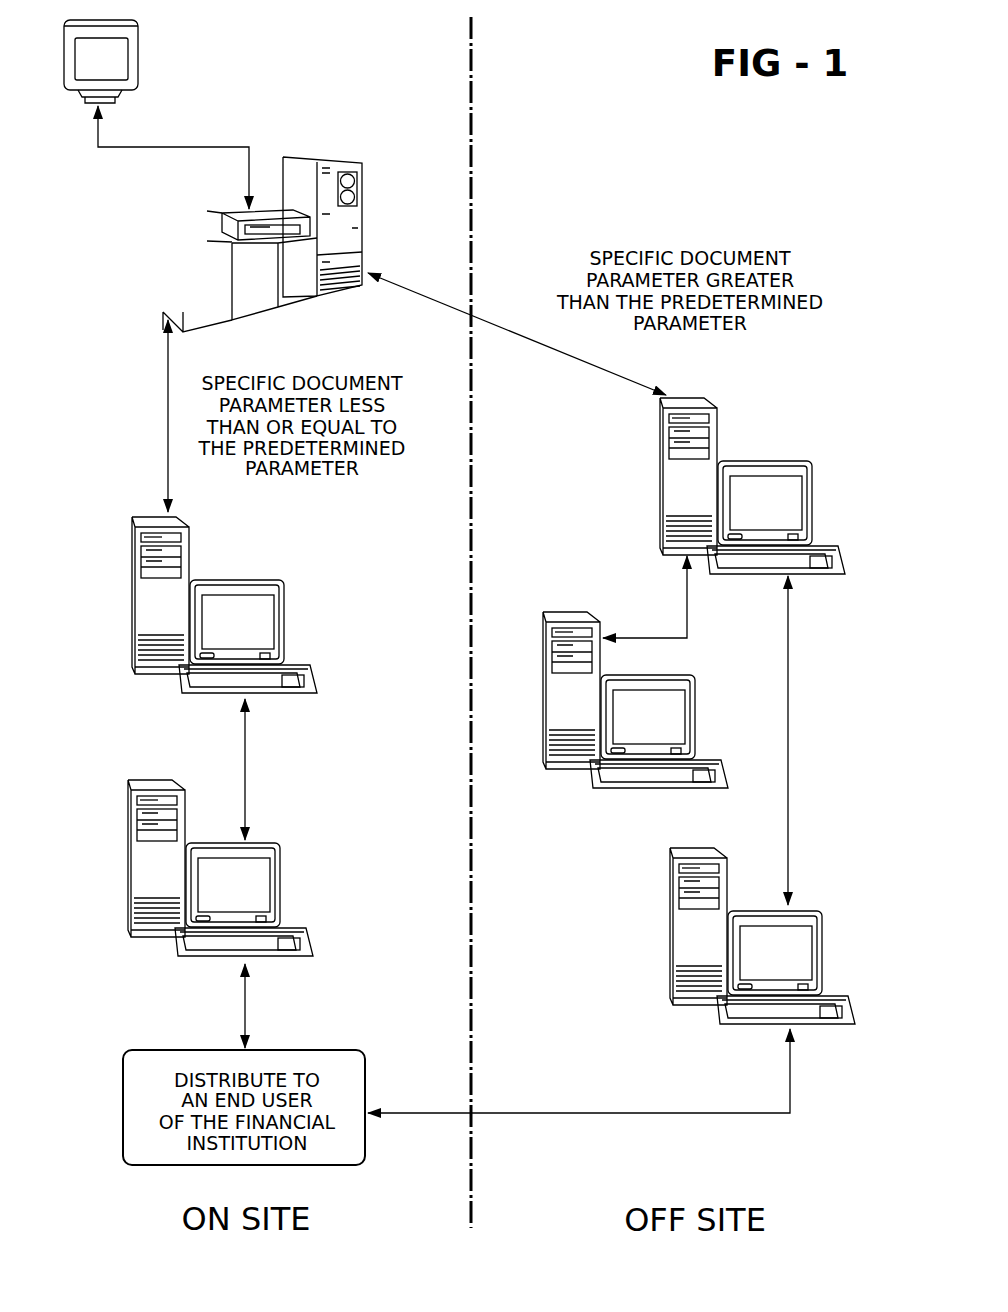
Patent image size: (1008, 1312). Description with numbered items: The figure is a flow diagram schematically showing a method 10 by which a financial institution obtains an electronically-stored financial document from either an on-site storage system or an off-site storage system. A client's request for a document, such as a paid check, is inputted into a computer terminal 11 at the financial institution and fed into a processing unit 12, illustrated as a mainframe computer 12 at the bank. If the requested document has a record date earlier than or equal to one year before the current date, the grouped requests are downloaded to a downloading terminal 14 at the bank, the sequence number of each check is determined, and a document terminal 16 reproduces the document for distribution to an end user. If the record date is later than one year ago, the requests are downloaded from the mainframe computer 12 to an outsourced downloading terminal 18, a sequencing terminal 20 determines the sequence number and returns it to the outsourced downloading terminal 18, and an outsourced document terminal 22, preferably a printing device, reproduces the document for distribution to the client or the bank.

The method for a financial institution to obtain an electronically-stored financial 10 is at (564, 132).
The computer terminal 11 is at (152, 70).
The processing unit 12 is at (384, 188).
The downloading terminal 14 is at (319, 619).
The document terminal 16 is at (306, 859).
The outsourced downloading terminal 18 is at (799, 440).
The sequencing terminal 20 is at (560, 800).
The outsourced document terminal 22 is at (632, 955).